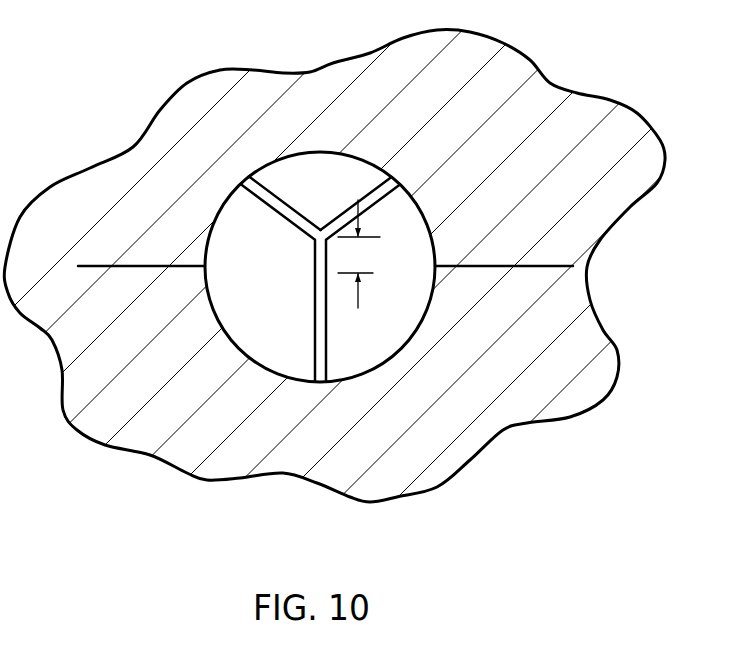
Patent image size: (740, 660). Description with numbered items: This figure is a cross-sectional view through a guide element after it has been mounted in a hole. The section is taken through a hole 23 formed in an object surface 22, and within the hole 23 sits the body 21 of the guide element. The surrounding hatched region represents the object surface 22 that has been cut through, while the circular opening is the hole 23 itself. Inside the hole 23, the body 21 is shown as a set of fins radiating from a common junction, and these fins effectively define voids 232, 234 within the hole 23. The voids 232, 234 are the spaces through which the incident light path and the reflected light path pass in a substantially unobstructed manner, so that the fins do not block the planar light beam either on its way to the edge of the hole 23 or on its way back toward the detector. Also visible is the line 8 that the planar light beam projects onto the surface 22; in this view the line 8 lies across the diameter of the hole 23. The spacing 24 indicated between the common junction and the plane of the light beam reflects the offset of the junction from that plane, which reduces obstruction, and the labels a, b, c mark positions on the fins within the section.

The object surface 22 is at (545, 147).
The hole 23 is at (322, 152).
The body 21 is at (421, 354).
The gap 24 is at (358, 252).
The line 8 is at (533, 266).
The void 232 is at (387, 322).
The void 234 is at (285, 348).
The first edge a is at (248, 181).
The second edge b is at (400, 188).
The third edge c is at (328, 380).